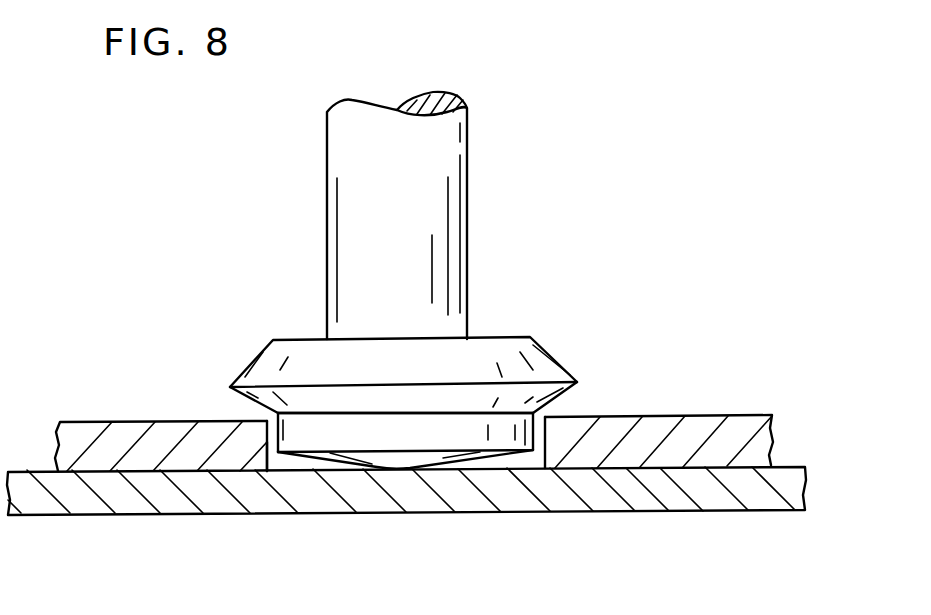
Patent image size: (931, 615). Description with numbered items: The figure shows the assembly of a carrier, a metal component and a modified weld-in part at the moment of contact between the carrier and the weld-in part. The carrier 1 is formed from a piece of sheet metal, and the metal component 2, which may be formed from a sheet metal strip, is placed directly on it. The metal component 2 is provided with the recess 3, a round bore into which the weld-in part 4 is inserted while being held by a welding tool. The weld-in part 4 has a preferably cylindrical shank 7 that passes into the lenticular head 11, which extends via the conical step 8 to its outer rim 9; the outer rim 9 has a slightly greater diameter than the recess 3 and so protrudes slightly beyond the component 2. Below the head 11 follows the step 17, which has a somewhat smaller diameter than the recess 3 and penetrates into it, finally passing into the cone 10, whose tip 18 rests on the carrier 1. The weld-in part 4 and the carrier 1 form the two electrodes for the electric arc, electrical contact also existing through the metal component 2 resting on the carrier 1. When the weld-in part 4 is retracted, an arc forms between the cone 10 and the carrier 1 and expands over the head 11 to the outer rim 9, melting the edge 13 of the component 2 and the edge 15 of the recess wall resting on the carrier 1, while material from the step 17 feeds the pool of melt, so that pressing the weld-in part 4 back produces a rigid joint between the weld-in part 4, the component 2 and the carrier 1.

The carrier 1 is at (745, 493).
The metal component 2 is at (737, 430).
The recess 3 is at (513, 458).
The weld-in part 4 is at (465, 182).
The shank 7 is at (352, 210).
The conical step 8 is at (538, 345).
The outer rim 9 is at (573, 382).
The cone 10 is at (478, 460).
The lenticular head 11 is at (262, 336).
The edge 13 is at (270, 414).
The edge 15 is at (268, 467).
The step 17 is at (275, 438).
The tip 18 is at (405, 463).